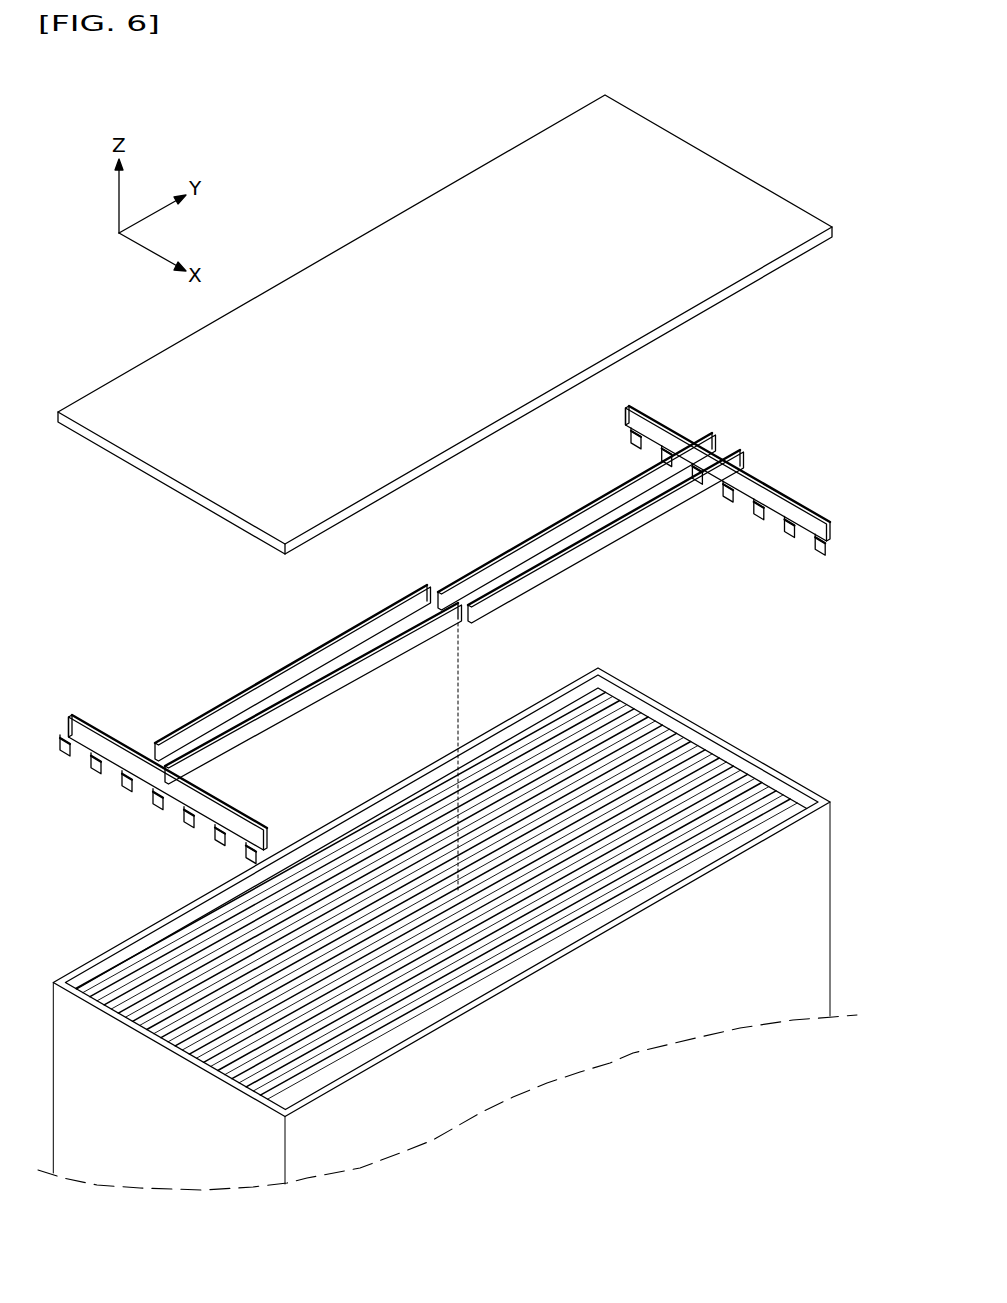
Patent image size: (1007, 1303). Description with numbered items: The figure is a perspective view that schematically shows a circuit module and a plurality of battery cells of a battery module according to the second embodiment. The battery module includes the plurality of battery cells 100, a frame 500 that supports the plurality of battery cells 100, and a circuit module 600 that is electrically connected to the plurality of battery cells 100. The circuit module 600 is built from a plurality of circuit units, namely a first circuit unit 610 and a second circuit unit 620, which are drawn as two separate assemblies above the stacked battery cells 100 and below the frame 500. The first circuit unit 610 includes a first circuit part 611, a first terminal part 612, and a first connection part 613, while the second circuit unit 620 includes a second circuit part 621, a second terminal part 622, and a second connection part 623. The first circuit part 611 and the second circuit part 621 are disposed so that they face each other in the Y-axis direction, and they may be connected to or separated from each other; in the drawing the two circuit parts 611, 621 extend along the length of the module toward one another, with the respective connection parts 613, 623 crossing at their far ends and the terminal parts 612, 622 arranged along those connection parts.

The battery cell 100 is at (623, 768).
The frame 500 is at (197, 465).
The circuit module 600 is at (143, 697).
The first circuit unit 610 is at (634, 500).
The first circuit part 611 is at (537, 545).
The first terminal part 612 is at (802, 525).
The first connection part 613 is at (654, 425).
The second circuit unit 620 is at (261, 733).
The second circuit part 621 is at (364, 668).
The second terminal part 622 is at (218, 852).
The second connection part 623 is at (228, 812).